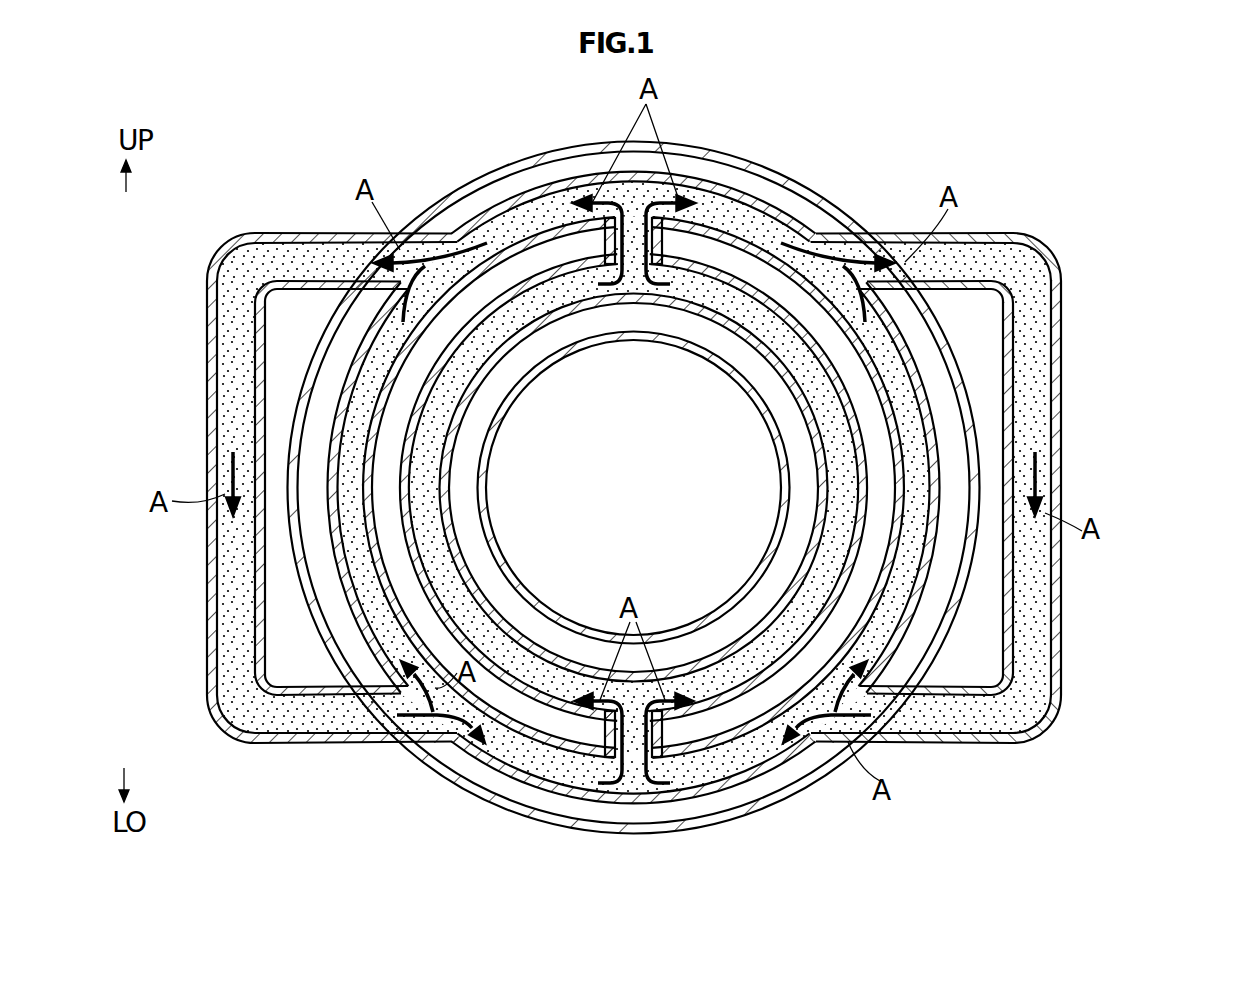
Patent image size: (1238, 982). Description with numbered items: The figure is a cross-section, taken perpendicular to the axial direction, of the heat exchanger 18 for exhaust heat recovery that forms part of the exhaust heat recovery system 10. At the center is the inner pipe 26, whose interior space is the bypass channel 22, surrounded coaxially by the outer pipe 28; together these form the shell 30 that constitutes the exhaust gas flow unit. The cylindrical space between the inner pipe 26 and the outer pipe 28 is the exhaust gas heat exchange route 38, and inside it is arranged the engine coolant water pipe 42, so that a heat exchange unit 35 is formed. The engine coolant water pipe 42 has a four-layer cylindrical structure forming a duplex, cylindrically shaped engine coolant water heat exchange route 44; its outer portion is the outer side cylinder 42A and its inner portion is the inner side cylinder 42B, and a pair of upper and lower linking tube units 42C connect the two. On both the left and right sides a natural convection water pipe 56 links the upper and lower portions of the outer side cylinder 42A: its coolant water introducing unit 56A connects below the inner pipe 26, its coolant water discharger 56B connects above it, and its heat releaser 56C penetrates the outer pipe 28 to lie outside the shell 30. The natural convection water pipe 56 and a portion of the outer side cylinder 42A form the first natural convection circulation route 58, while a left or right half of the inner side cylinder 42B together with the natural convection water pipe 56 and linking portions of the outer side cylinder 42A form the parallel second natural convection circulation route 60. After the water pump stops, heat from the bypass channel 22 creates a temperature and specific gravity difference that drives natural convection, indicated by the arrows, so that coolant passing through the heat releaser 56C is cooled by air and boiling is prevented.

The exhaust heat recovery system 10 is at (1067, 113).
The heat exchanger 18 is at (958, 128).
The bypass channel 22 is at (656, 496).
The inner pipe 26 is at (583, 346).
The outer pipe 28 is at (486, 168).
The shell 30 is at (558, 98).
The heat exchange unit 35 is at (777, 773).
The exhaust gas heat exchange route 38 is at (703, 668).
The engine coolant water pipe 42 is at (634, 497).
The outer side cylinder 42A is at (765, 247).
The inner side cylinder 42B is at (790, 292).
The linking tube unit 42C is at (718, 224).
The engine coolant water heat exchange route 44 is at (522, 672).
The natural convection water pipe 56 is at (658, 477).
The coolant water introducing unit 56A is at (428, 742).
The coolant water discharger 56B is at (458, 245).
The heat releaser 56C is at (210, 570).
The first natural convection circulation route 58 is at (272, 660).
The second natural convection circulation route 60 is at (380, 637).